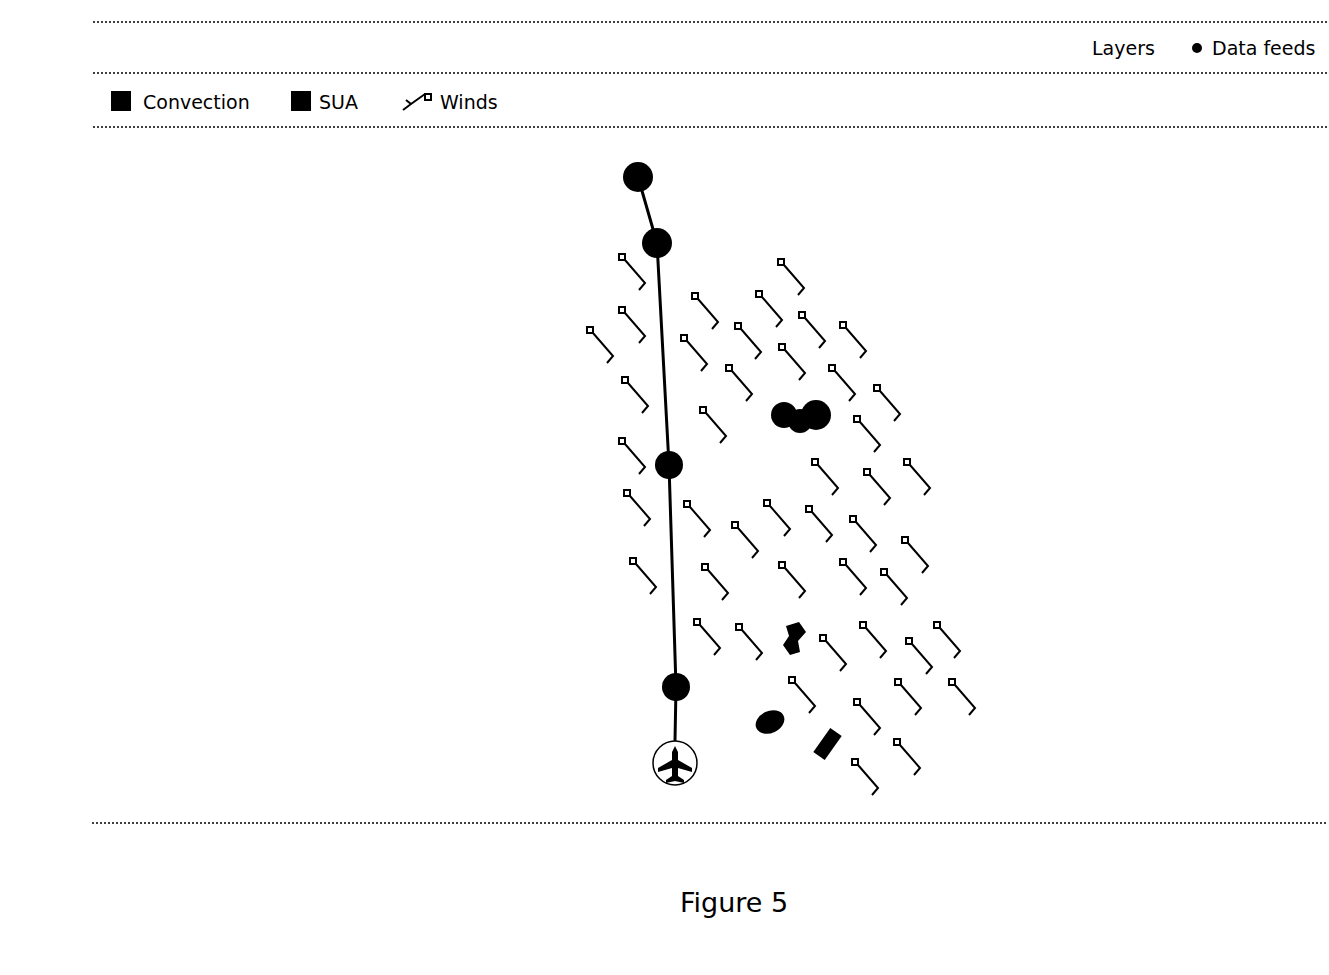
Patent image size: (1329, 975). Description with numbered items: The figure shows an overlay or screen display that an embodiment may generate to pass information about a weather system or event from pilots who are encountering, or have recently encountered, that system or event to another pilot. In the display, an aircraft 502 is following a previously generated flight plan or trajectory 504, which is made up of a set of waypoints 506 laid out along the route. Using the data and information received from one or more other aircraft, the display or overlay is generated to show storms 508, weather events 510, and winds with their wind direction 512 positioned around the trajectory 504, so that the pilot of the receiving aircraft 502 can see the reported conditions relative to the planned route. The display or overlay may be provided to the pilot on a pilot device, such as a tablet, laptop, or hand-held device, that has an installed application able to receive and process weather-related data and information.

The aircraft 502 is at (648, 763).
The flight plan or trajectory 504 is at (663, 422).
The waypoints 506 is at (643, 237).
The storms 508 is at (833, 421).
The weather events 510 is at (838, 741).
The winds 512 is at (920, 557).